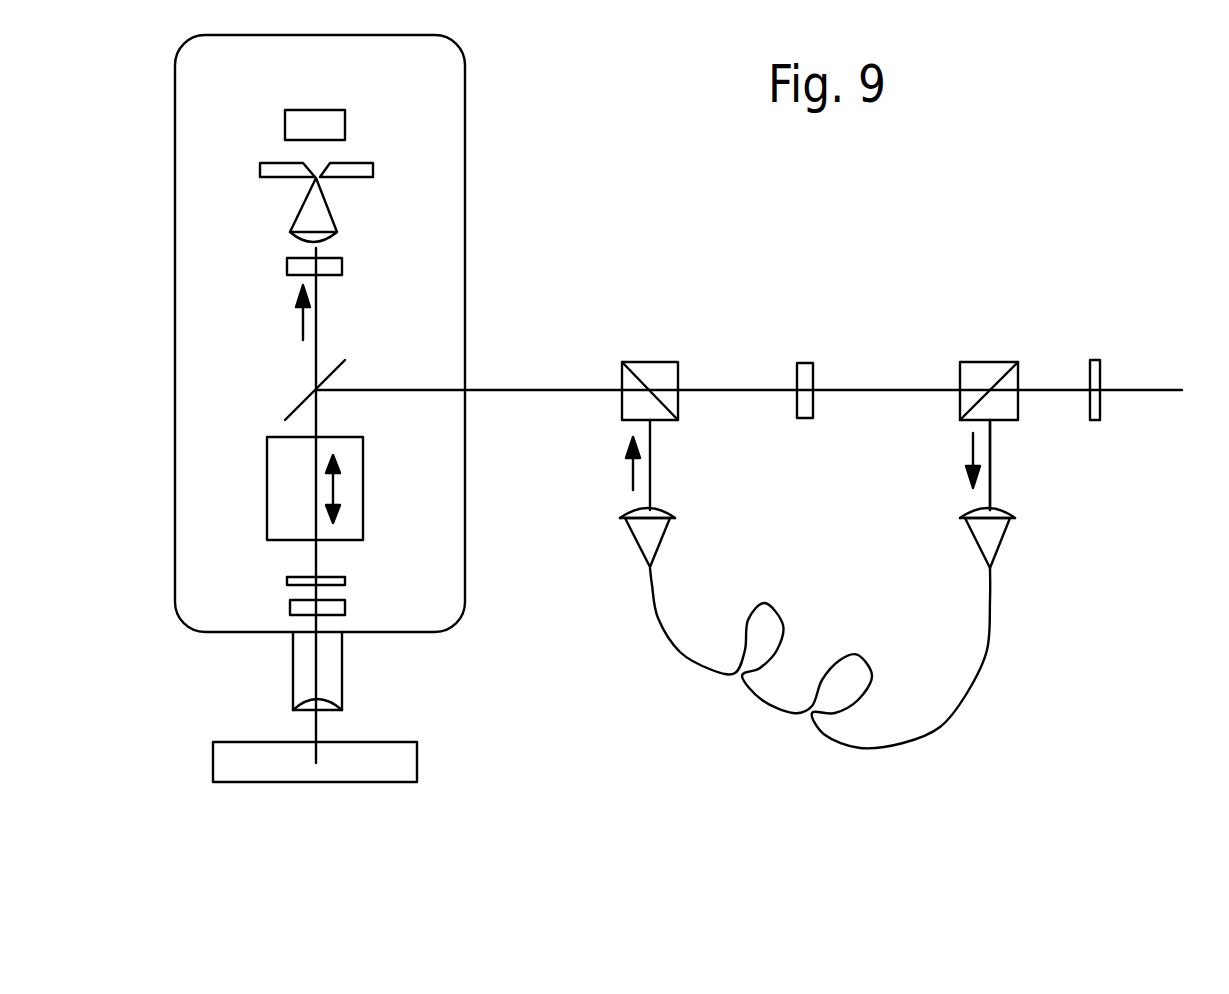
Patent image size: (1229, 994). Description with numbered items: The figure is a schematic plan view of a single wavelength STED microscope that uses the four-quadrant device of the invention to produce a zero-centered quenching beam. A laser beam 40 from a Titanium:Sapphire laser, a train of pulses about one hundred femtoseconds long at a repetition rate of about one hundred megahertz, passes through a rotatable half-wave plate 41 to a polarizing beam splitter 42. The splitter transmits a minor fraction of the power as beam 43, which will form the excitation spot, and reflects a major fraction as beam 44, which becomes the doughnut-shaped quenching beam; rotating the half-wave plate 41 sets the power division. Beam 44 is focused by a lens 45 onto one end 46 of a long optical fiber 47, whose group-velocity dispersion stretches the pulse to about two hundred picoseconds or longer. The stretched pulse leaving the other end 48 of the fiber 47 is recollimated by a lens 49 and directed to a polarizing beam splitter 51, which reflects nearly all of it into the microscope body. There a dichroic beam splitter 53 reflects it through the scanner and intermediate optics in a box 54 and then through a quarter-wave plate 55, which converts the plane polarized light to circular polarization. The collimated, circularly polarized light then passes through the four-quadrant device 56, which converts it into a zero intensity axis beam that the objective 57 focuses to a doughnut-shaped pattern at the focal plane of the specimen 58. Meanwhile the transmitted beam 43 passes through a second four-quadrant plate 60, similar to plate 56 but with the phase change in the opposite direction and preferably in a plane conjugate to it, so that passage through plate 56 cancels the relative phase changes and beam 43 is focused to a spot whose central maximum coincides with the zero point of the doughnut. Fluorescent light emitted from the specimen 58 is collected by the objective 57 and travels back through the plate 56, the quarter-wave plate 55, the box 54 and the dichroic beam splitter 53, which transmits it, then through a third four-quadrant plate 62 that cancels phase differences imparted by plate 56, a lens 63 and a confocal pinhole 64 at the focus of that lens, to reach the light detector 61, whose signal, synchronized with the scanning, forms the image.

The laser beam 40 is at (1152, 383).
The rotatable half-wave plate 41 is at (1095, 353).
The polarizing beam splitter 42 is at (1005, 356).
The beam 43 is at (853, 386).
The beam 44 is at (993, 462).
The lens 45 is at (1012, 505).
The end of optical fiber 46 is at (995, 573).
The long optical fiber 47 is at (943, 723).
The end of optical fiber 48 is at (644, 570).
The lens 49 is at (672, 505).
The polarizing beam splitter 51 is at (668, 356).
The dichroic beam splitter 53 is at (337, 363).
The box 54 is at (357, 432).
The quarter-wave plate 55 is at (345, 577).
The four-quadrant device 56 is at (345, 608).
The objective 57 is at (342, 668).
The specimen 58 is at (417, 755).
The second four-quadrant plate 60 is at (803, 357).
The light detector 61 is at (335, 108).
The third four-quadrant plate 62 is at (338, 280).
The lens 63 is at (338, 230).
The confocal pinhole 64 is at (363, 160).